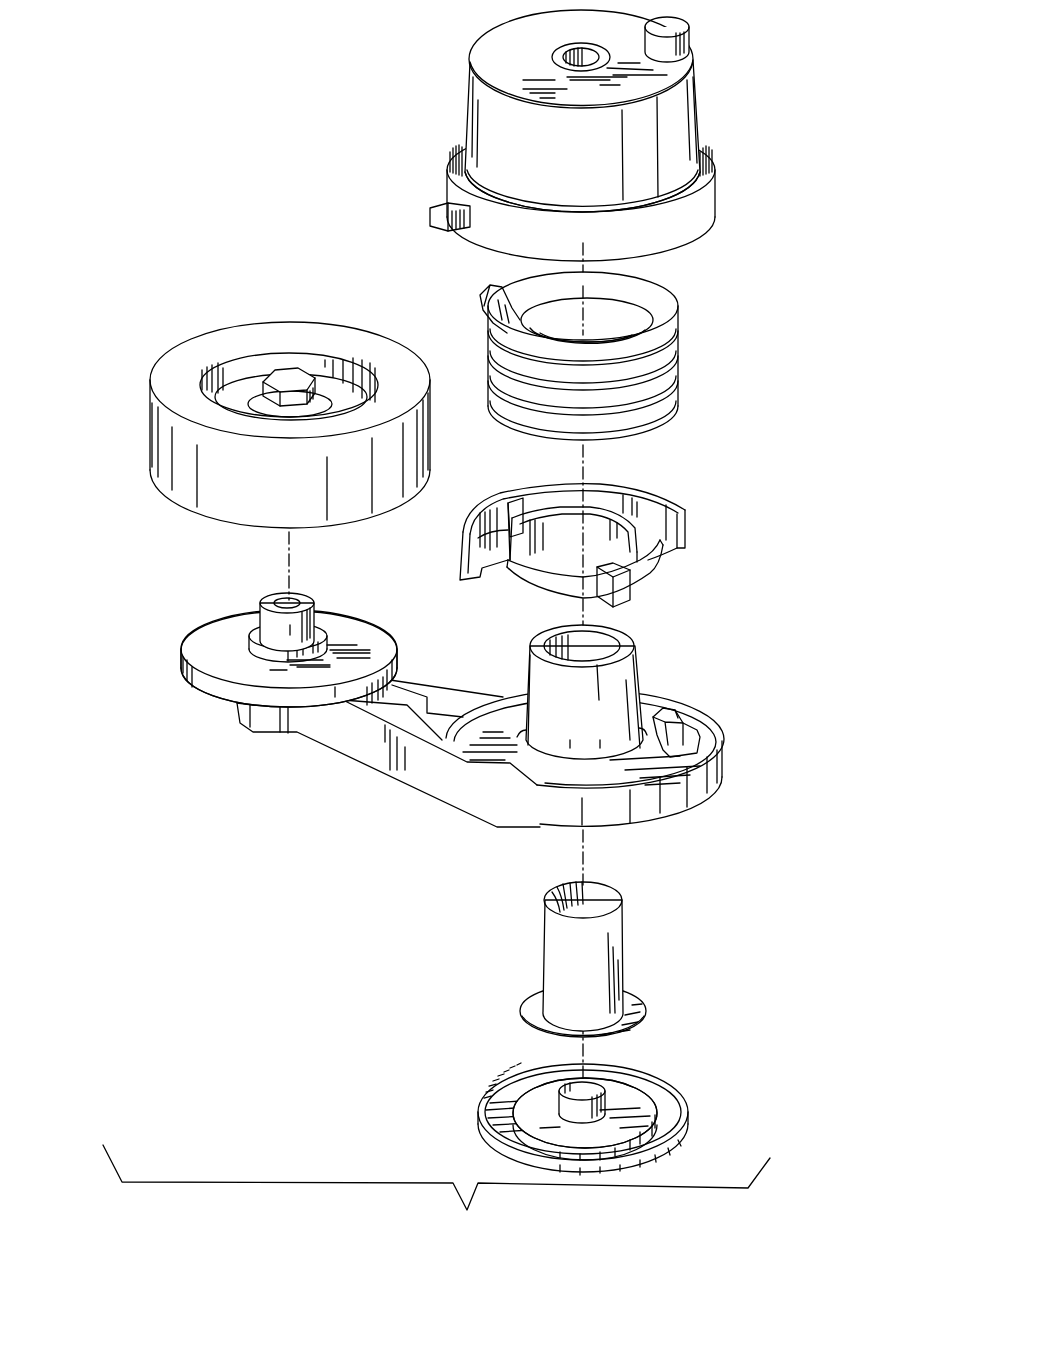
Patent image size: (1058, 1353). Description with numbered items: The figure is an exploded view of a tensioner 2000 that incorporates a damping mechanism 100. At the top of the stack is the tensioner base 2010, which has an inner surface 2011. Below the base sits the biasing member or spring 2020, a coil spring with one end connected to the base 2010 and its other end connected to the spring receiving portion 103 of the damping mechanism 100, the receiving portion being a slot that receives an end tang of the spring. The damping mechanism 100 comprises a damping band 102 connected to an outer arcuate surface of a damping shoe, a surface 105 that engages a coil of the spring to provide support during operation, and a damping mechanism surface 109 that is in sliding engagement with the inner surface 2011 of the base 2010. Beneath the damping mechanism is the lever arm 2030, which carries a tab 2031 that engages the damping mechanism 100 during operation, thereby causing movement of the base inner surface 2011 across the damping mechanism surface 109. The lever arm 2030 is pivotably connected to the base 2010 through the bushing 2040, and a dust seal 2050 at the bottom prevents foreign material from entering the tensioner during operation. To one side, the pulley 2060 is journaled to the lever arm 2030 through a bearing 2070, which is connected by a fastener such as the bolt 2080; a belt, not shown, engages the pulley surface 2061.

The tensioner assembly 2000 is at (716, 48).
The base 2010 is at (702, 128).
The inner surface 2011 is at (502, 212).
The spring 2020 is at (682, 310).
The damping mechanism 100 is at (696, 525).
The damping band 102 is at (637, 493).
The spring receiving portion 103 is at (528, 508).
The surface 105 is at (660, 572).
The damping mechanism surface 109 is at (684, 497).
The pulley 2060 is at (146, 444).
The pulley surface 2061 is at (185, 465).
The bearing 2070 is at (238, 395).
The bolt 2080 is at (288, 382).
The lever arm 2030 is at (720, 768).
The tab 2031 is at (688, 737).
The bushing 2040 is at (622, 932).
The dust seal 2050 is at (680, 1092).